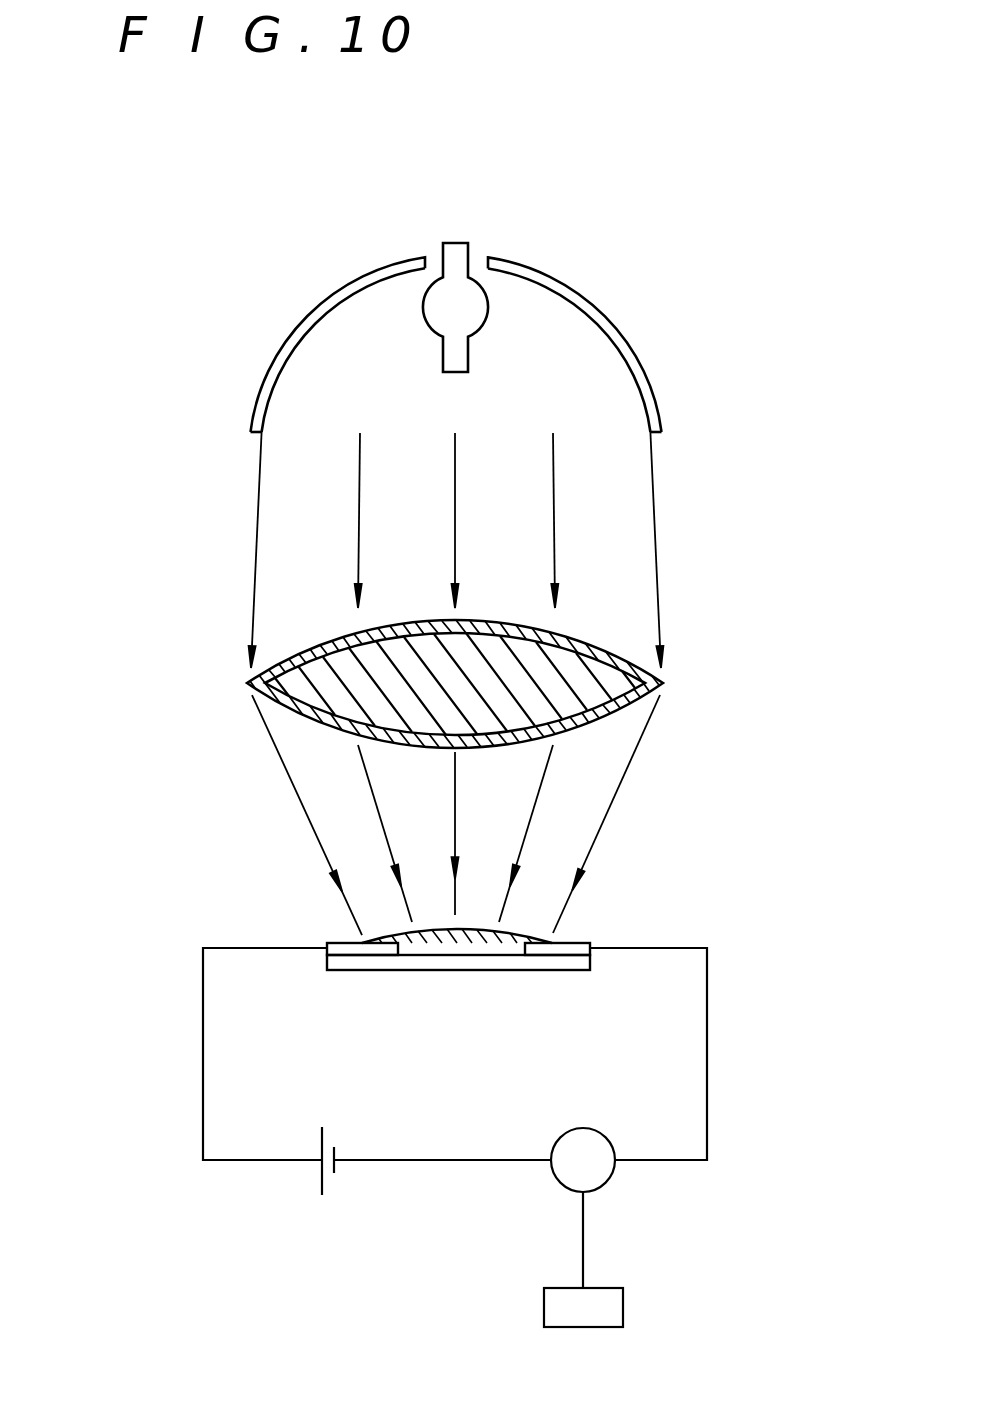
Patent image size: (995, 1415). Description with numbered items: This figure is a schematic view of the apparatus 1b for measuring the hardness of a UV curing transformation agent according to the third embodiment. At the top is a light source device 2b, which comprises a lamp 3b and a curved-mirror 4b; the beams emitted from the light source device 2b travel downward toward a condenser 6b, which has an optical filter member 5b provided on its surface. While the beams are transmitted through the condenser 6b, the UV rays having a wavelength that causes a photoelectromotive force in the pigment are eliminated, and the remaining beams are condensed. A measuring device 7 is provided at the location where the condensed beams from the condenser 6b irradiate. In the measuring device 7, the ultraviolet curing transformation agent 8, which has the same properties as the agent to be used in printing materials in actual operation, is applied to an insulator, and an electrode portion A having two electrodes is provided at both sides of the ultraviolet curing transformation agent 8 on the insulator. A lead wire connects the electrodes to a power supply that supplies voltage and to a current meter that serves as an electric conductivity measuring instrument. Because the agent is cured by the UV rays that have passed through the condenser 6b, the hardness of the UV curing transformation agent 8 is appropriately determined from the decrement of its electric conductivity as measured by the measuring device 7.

The apparatus for measuring the hardness of the UV curing transformation agent 1b is at (652, 303).
The light source device 2b is at (263, 358).
The lamp 3b is at (453, 257).
The curved-mirror 4b is at (323, 300).
The optical filter member 5b is at (601, 645).
The condenser 6b is at (577, 680).
The measuring device 7 is at (714, 923).
The ultraviolet curing transformation agent 8 is at (503, 940).
The electrode portion A is at (325, 941).